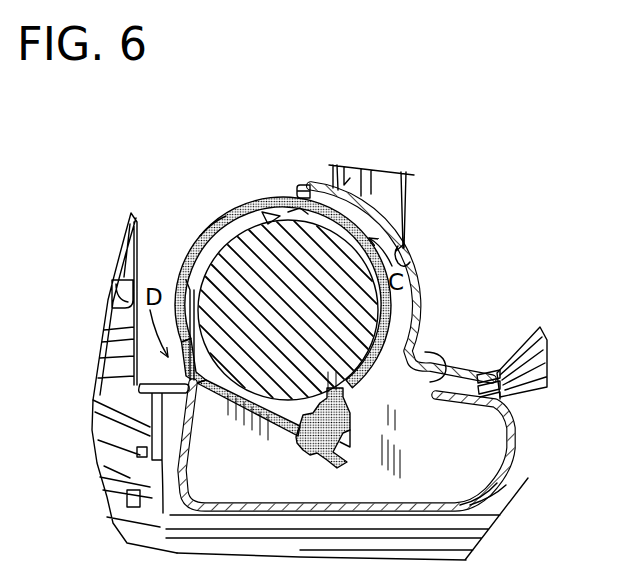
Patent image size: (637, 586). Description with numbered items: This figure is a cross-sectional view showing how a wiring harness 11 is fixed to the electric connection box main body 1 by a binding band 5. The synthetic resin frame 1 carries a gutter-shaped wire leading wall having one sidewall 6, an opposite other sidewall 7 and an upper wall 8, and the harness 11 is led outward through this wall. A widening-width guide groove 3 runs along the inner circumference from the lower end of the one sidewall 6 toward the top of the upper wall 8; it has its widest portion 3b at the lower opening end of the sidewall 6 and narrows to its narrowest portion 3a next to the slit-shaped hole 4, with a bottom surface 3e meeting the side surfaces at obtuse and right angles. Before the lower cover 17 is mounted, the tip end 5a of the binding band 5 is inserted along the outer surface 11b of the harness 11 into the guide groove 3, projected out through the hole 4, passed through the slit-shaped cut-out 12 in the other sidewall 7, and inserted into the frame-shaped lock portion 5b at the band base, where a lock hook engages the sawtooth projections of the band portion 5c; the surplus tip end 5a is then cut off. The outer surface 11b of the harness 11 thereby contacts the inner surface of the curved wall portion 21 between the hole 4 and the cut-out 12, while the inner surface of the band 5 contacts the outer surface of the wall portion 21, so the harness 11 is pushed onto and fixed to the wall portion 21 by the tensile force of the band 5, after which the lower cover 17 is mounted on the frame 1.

The electric connection box main body 1 is at (488, 258).
The guide groove 3 is at (412, 250).
The narrowest portion of the guide groove 3a is at (303, 185).
The widest portion of the guide groove 3b is at (405, 360).
The bottom surface of the guide groove 3e is at (398, 262).
The hole 4 is at (296, 196).
The binding band 5 is at (230, 210).
The tip end of the binding band 5a is at (345, 452).
The lock portion 5b is at (307, 452).
The band portion 5c is at (262, 412).
The one sidewall 6 is at (423, 302).
The other sidewall 7 is at (180, 288).
The upper wall 8 is at (274, 212).
The wiring harness 11 is at (357, 308).
The outer surface of the wiring harness 11b is at (313, 223).
The cut-out 12 is at (187, 374).
The lower cover 17 is at (497, 484).
The wall portion 21 is at (214, 250).